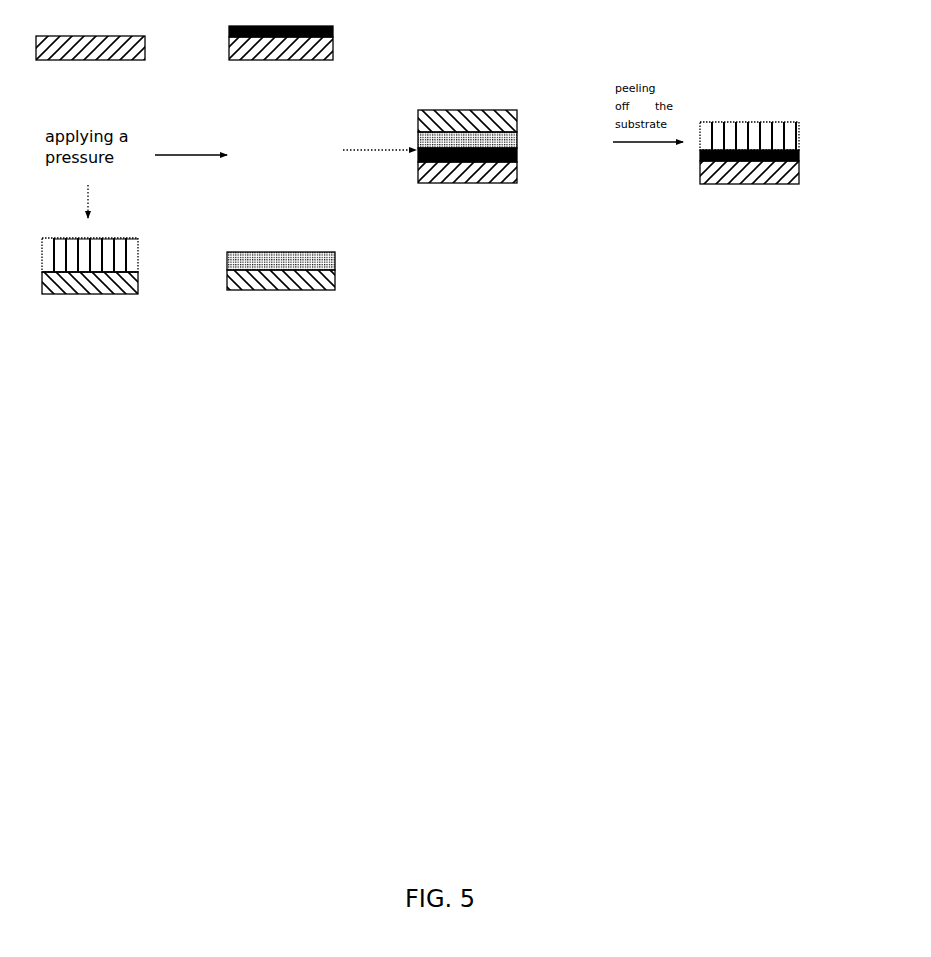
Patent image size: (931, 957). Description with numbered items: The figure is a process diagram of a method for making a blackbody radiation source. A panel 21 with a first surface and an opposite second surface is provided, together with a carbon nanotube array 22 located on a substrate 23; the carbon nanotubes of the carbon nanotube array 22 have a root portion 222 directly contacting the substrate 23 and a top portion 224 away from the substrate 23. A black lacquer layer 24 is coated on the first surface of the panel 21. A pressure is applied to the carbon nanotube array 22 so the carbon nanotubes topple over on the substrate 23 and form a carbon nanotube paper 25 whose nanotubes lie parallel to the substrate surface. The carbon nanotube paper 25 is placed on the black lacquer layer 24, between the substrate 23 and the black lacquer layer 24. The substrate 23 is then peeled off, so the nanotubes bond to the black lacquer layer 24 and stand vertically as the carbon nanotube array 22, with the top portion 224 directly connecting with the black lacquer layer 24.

The panel 21 is at (108, 36).
The carbon nanotube array 22 is at (65, 237).
The root portion 222 is at (143, 270).
The top portion 224 is at (130, 235).
The substrate 23 is at (90, 295).
The black lacquer layer 24 is at (307, 24).
The carbon nanotube paper 25 is at (277, 253).